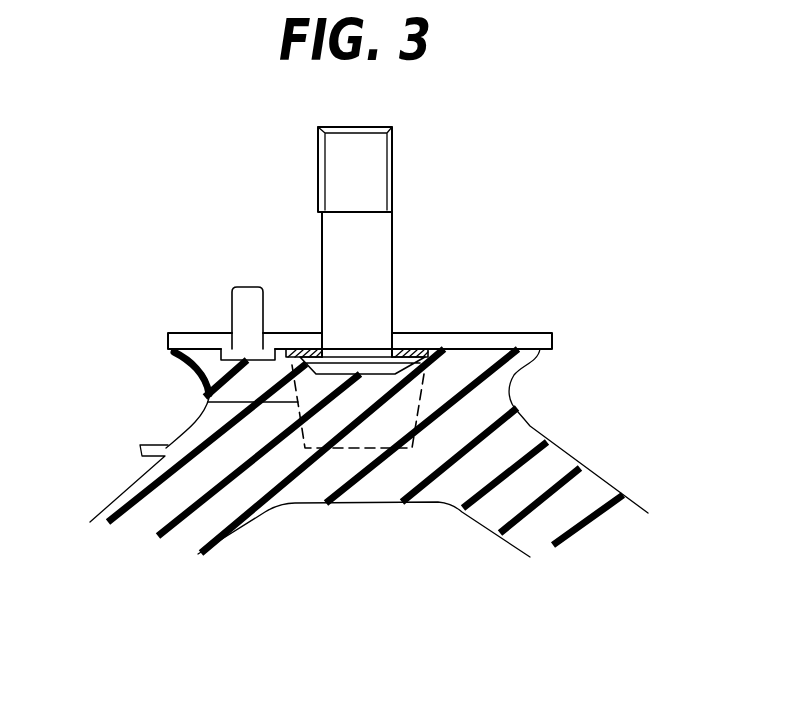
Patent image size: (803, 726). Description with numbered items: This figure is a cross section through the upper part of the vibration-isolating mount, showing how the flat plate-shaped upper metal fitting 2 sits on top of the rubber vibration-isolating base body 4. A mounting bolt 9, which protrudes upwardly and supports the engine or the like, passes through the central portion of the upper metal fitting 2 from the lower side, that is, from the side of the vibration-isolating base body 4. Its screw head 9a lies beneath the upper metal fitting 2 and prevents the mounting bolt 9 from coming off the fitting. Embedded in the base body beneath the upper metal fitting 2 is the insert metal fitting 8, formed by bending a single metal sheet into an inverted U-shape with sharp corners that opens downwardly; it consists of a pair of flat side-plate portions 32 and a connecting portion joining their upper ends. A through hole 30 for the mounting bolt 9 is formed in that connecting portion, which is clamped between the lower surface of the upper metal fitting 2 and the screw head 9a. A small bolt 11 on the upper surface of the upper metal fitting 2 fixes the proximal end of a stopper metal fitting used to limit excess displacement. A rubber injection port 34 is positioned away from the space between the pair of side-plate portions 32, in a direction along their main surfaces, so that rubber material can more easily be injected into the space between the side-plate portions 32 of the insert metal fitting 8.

The upper metal fitting 2 is at (505, 341).
The vibration-isolating base body 4 is at (252, 492).
The insert metal fitting 8 is at (370, 448).
The mounting bolt 9 is at (372, 243).
The screw head 9a is at (368, 373).
The small bolt 11 is at (246, 322).
The through hole 30 is at (323, 357).
The flat side-plate portions 32 is at (201, 397).
The rubber injection port 34 is at (140, 445).